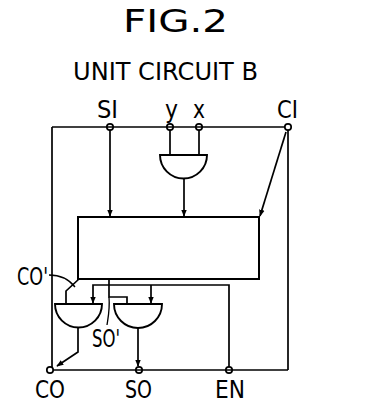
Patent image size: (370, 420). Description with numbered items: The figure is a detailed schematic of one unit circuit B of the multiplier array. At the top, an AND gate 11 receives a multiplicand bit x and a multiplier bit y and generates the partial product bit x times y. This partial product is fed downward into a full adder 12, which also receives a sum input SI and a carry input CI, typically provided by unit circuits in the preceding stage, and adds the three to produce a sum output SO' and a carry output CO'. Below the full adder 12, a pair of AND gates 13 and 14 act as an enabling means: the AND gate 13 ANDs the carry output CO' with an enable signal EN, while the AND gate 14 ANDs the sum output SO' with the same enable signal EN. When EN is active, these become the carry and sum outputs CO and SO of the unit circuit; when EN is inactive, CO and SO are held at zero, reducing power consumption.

The AND gate 11 is at (200, 163).
The full adder 12 is at (243, 270).
The AND gate 13 is at (68, 315).
The AND gate 14 is at (154, 313).